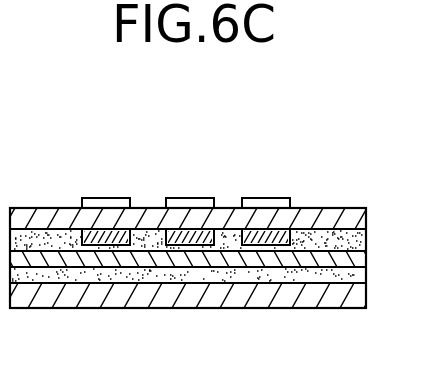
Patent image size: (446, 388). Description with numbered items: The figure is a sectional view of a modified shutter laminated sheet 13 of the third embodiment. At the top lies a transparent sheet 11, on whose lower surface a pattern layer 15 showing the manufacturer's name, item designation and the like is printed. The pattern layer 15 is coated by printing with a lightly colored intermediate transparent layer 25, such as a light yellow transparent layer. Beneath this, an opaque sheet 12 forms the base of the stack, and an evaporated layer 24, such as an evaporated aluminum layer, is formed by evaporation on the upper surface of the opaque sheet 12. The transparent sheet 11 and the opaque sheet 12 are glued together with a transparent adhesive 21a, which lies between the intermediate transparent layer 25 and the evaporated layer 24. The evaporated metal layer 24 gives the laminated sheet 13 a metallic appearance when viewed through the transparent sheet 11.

The transparent sheet 11 is at (62, 208).
The laminated sheet 13 is at (43, 207).
The pattern layer 15 is at (229, 208).
The intermediate transparent layer 25 is at (312, 233).
The transparent adhesive 21a is at (318, 262).
The evaporated layer 24 is at (233, 268).
The opaque sheet 12 is at (47, 292).